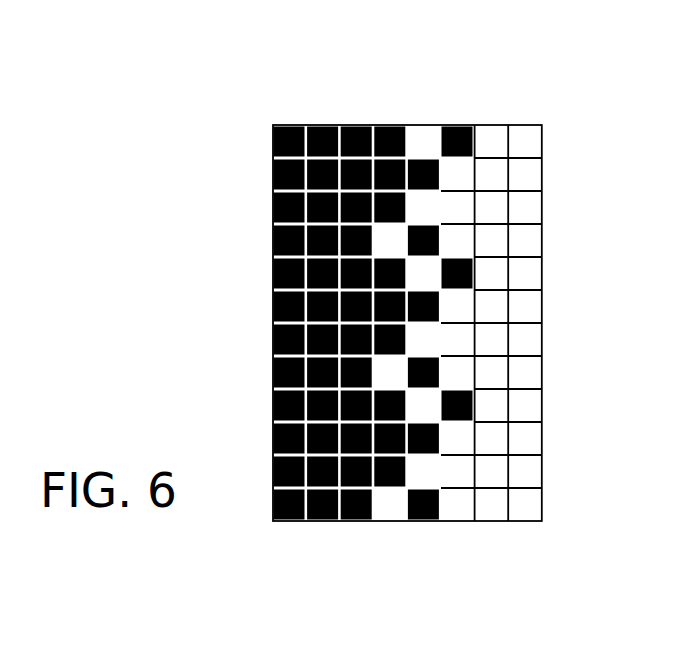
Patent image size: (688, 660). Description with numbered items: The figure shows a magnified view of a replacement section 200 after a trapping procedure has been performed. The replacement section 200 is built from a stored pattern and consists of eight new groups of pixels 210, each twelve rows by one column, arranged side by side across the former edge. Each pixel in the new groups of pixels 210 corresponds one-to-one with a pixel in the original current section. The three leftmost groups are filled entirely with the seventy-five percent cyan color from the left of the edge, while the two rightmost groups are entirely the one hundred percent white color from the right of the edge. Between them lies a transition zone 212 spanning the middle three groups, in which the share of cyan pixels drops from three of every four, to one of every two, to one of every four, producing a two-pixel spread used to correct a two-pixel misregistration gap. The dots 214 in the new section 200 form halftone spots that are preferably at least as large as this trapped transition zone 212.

The replacement section 200 is at (617, 53).
The new groups of pixels 210 is at (384, 333).
The transition zone 212 is at (477, 531).
The dots 214 is at (275, 322).